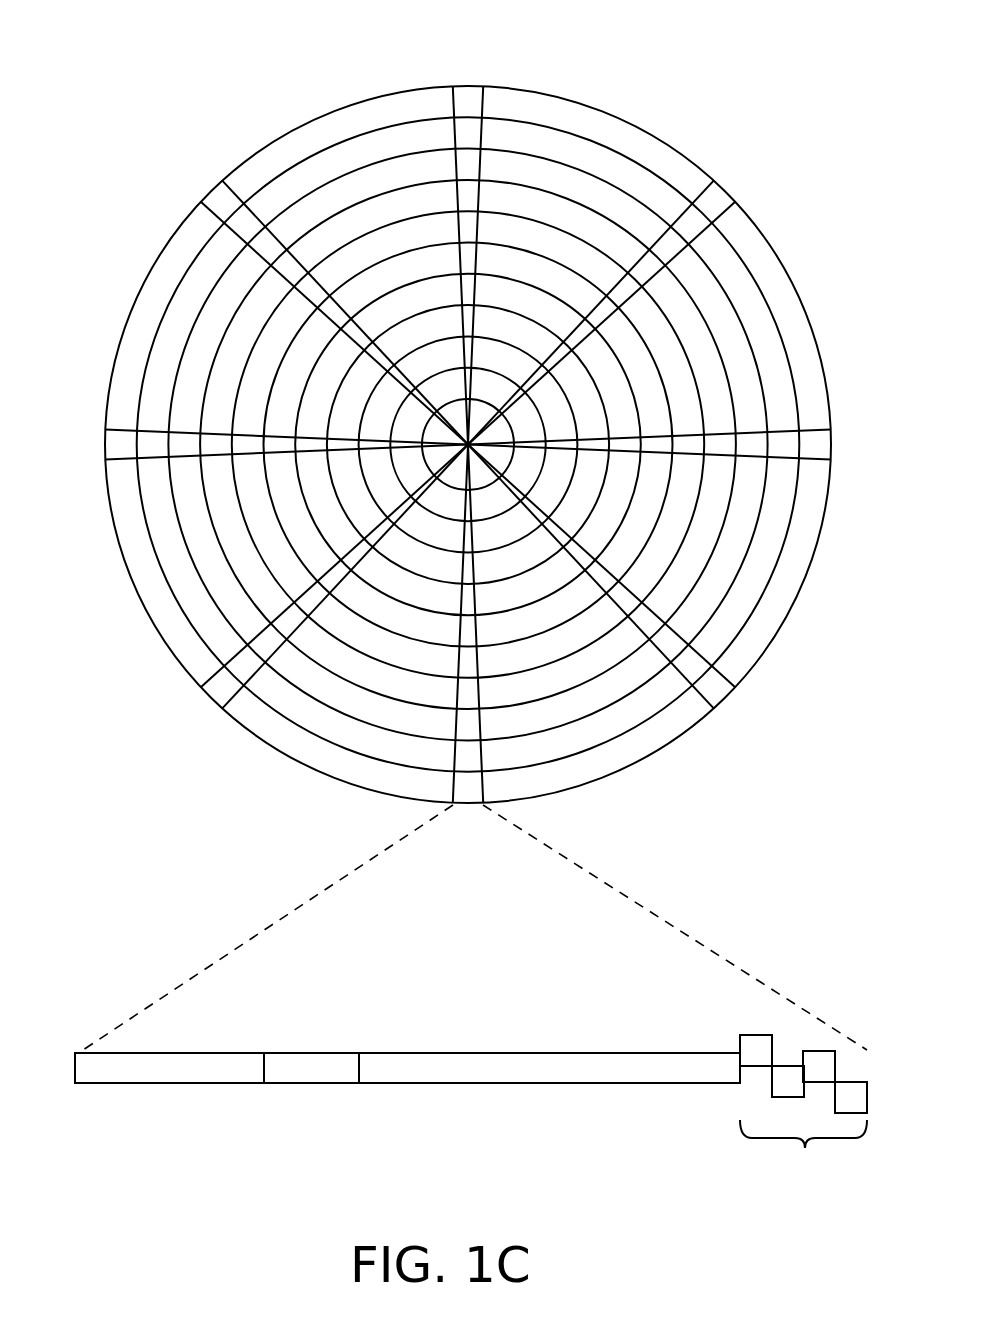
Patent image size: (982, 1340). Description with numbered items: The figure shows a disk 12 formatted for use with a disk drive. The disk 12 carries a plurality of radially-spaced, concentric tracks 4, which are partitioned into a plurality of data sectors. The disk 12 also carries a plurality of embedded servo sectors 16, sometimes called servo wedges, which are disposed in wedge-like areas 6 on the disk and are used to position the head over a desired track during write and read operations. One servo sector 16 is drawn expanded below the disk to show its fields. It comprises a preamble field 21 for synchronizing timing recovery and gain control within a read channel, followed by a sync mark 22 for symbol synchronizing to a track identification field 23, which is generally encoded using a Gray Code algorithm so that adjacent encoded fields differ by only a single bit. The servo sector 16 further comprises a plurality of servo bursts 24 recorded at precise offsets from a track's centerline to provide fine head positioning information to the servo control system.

The disk 12 is at (186, 84).
The tracks 4 is at (590, 158).
The wedge-like areas 6 is at (468, 95).
The embedded servo sector 16 is at (303, 877).
The preamble field 21 is at (150, 1084).
The sync mark 22 is at (308, 1084).
The track identification field 23 is at (538, 1084).
The servo bursts 24 is at (715, 1008).